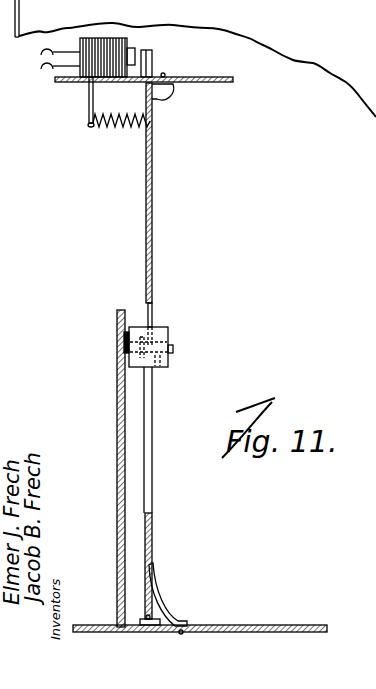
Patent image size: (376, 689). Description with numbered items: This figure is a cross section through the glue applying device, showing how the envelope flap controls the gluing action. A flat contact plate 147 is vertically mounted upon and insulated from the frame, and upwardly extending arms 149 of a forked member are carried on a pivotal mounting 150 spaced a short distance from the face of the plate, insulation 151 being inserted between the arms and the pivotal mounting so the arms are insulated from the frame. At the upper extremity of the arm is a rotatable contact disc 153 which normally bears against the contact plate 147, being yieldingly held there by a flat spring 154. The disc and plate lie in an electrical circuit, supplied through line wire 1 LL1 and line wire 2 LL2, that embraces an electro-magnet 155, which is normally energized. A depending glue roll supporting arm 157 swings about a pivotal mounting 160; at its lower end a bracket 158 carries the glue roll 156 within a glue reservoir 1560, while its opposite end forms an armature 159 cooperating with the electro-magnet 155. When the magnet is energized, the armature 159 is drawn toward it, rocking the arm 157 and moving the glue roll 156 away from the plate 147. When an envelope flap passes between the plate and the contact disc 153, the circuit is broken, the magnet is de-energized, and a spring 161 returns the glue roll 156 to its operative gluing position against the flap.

The line wire 1 LL1 is at (46, 53).
The line wire 2 LL2 is at (45, 68).
The contact plate 147 is at (118, 482).
The upwardly extending arms 149 is at (152, 428).
The pivotal mounting 150 is at (148, 618).
The insulation 151 is at (152, 533).
The contact disc 153 is at (172, 347).
The flat spring 154 is at (165, 600).
The electro-magnet 155 is at (100, 83).
The glue roll 156 is at (162, 337).
The glue reservoir 1560 is at (168, 362).
The glue roll supporting arm 157 is at (153, 203).
The bracket 158 is at (153, 305).
The armature 159 is at (153, 54).
The pivotal mounting 160 is at (157, 98).
The spring 161 is at (122, 126).